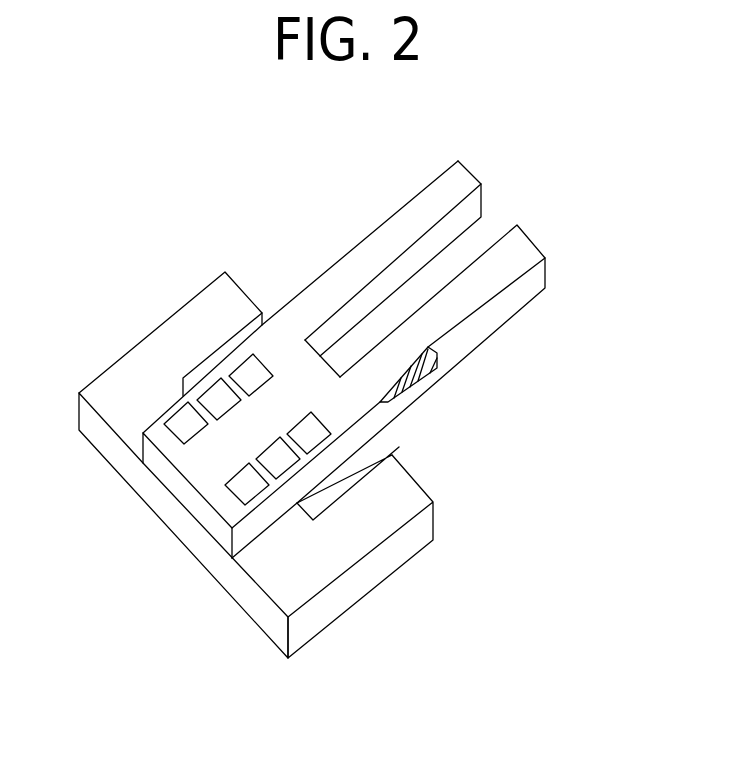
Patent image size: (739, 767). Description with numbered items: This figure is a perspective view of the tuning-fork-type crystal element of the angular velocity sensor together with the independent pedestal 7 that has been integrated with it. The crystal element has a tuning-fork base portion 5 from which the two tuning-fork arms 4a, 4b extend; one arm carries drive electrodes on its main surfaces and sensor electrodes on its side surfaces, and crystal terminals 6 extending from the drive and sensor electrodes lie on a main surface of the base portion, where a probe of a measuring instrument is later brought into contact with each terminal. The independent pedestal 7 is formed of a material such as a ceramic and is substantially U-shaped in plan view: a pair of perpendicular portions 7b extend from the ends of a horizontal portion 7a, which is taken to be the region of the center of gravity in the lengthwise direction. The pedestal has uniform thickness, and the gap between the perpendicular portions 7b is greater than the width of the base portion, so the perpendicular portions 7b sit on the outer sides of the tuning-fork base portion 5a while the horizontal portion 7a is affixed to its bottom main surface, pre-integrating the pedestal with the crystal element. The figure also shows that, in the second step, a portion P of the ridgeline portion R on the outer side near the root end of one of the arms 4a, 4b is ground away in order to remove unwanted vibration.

The independent pedestal 7 is at (296, 467).
The horizontal portion 7a is at (183, 522).
The perpendicular portions 7b is at (163, 318).
The tuning-fork base portion 5 is at (338, 409).
The tuning-fork base portion 5a is at (191, 466).
The crystal terminals 6 is at (184, 422).
The tuning-fork arm 4a is at (540, 281).
The tuning-fork arm 4b is at (478, 207).
The ridgeline portion R is at (502, 300).
The portion P is at (377, 423).